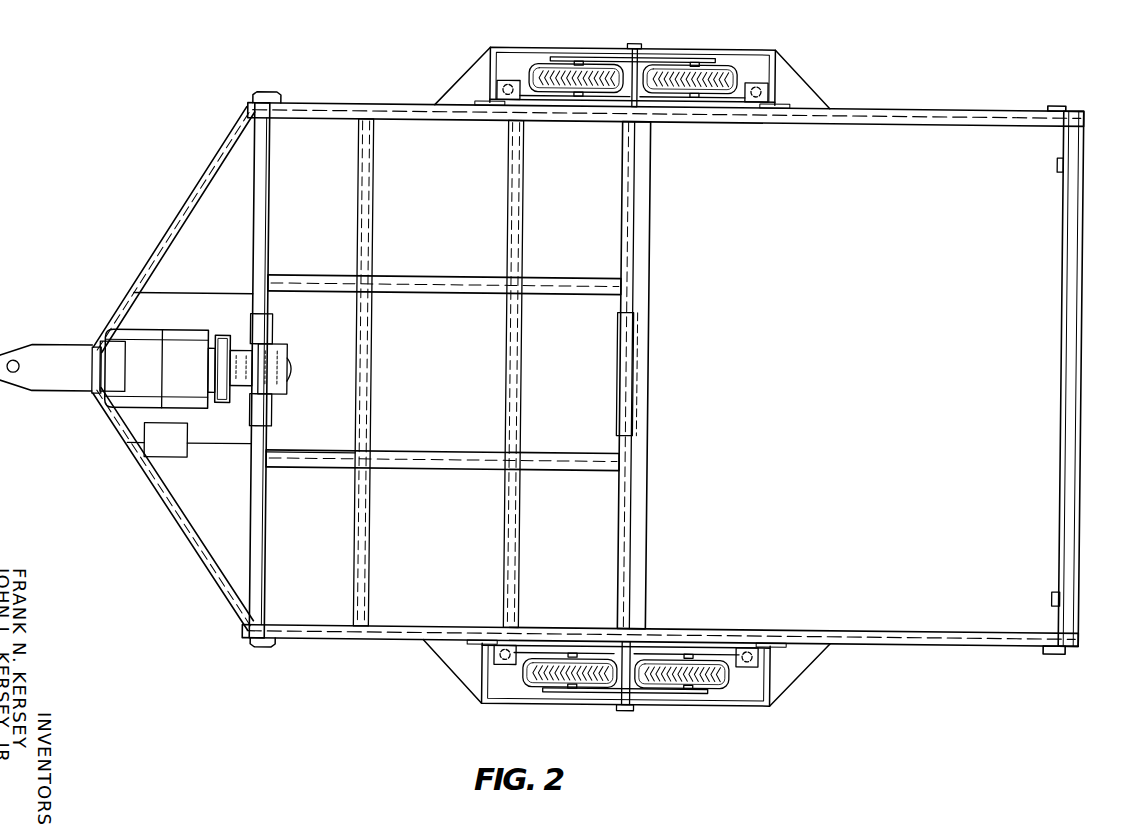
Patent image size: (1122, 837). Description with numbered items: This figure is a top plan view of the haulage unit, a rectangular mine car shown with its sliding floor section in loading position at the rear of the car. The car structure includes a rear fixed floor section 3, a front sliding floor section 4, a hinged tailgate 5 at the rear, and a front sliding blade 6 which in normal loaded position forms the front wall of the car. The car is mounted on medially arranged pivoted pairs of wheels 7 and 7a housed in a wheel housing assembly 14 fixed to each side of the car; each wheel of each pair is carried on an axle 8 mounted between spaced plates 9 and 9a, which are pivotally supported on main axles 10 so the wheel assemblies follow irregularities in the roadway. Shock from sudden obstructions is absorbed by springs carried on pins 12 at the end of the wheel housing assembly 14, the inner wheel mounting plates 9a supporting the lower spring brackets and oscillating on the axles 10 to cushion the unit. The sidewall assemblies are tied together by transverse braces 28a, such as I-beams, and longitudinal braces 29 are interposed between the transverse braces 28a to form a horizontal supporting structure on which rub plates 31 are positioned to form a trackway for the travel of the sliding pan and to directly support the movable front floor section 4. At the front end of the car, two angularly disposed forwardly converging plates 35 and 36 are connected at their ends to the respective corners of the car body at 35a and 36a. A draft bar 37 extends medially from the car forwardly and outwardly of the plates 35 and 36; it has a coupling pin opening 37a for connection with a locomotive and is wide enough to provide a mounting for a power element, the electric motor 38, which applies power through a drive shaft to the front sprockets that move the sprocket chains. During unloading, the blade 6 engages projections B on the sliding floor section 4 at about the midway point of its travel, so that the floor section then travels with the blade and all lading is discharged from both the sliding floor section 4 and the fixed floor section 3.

The hinged tailgate 5 is at (1084, 278).
The front sliding blade 6 is at (650, 433).
The wheel 7 is at (549, 69).
The wheel 7a is at (538, 677).
The axle 8 is at (575, 62).
The plate 9 is at (607, 59).
The inner wheel mounting plate 9a is at (597, 101).
The main axle 10 is at (634, 65).
The pin 12 is at (411, 704).
The wheel housing assembly 14 is at (757, 52).
The transverse brace 28a is at (367, 523).
The longitudinal brace 29 is at (300, 283).
The rub plate 31 is at (318, 455).
The forwardly converging plate 35 is at (130, 482).
The corner connection 35a is at (243, 645).
The forwardly converging plate 36 is at (139, 284).
The corner connection 36a is at (245, 109).
The draft bar 37 is at (60, 357).
The coupling pin opening 37a is at (14, 380).
The electric motor 38 is at (179, 348).
The projection B is at (1054, 161).
The rear fixed floor section 3 is at (190, 117).
The front sliding floor section 4 is at (423, 105).